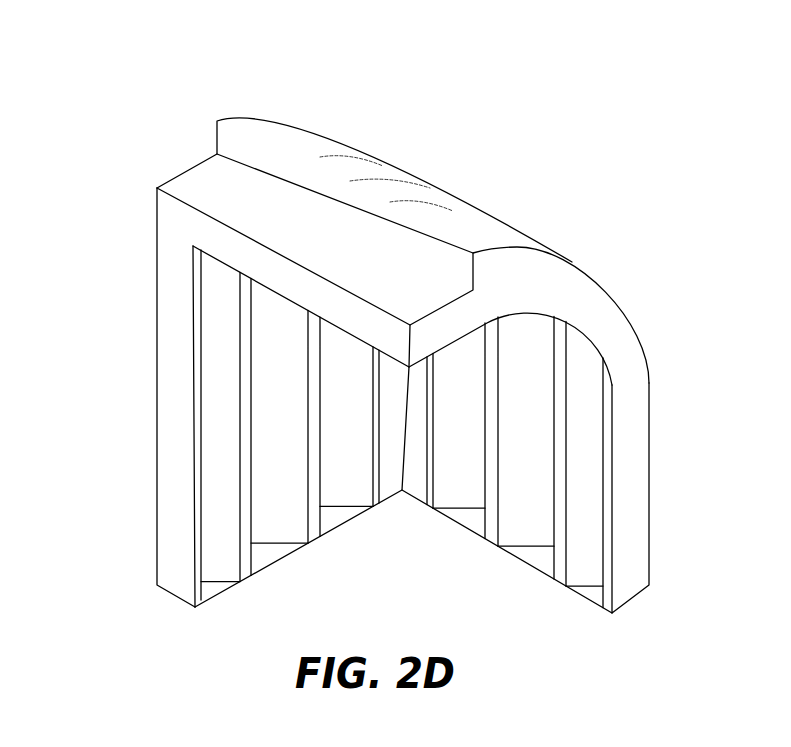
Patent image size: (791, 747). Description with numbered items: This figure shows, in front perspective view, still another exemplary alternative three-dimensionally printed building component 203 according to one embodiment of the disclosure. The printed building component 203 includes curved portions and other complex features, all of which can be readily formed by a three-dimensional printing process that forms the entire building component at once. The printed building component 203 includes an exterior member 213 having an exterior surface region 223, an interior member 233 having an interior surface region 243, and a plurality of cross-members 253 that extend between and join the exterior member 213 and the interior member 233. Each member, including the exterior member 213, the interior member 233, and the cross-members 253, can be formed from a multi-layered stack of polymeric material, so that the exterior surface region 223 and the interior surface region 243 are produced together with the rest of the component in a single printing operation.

The printed building component 203 is at (134, 53).
The exterior surface region 223 is at (152, 236).
The exterior member 213 is at (177, 355).
The cross-members 253 is at (223, 458).
The interior member 233 is at (580, 300).
The interior surface region 243 is at (648, 409).